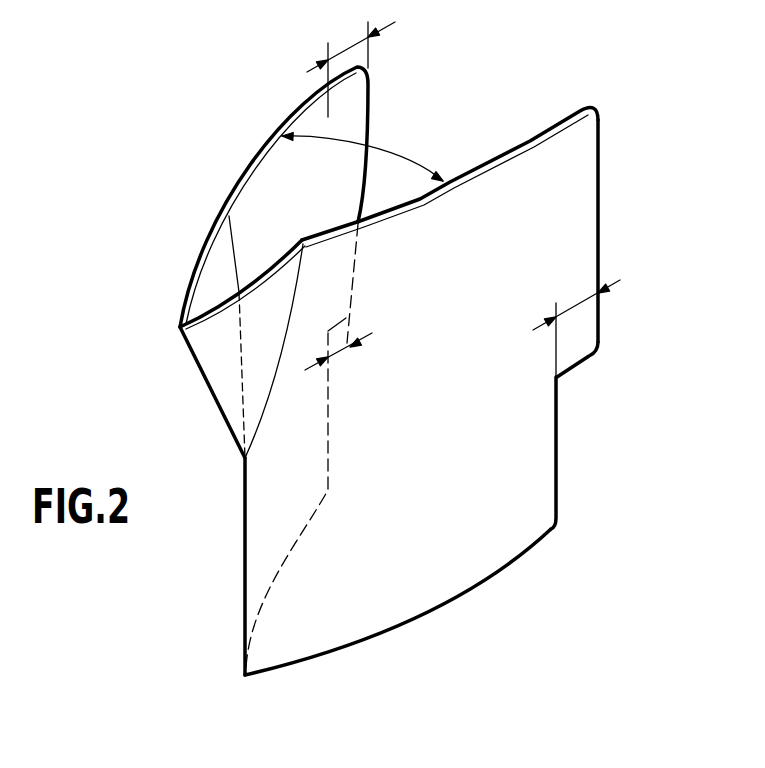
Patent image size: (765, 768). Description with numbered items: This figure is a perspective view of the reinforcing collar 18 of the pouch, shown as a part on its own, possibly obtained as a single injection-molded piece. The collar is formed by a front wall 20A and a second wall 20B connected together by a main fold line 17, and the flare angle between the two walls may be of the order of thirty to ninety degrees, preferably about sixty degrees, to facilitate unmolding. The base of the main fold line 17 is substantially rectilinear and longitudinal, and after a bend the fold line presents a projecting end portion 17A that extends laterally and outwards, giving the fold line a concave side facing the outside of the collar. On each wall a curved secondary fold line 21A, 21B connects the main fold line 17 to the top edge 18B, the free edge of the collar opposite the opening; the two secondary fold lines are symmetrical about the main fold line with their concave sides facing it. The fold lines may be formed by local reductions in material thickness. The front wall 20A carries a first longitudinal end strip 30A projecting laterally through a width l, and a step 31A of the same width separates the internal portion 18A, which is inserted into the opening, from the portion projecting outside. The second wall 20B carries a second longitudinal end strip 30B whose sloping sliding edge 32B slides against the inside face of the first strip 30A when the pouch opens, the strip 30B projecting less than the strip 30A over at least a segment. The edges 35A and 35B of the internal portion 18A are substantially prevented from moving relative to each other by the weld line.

The reinforcing collar 18 is at (614, 158).
The main fold line 17 is at (245, 603).
The end portion of the main fold line 17A is at (197, 374).
The internal portion of the collar 18A is at (440, 565).
The top edge of the collar 18B is at (492, 164).
The front wall 20A is at (511, 328).
The second wall 20B is at (312, 211).
The secondary fold line 21A is at (283, 368).
The secondary fold line 21B is at (233, 289).
The first longitudinal end strip 30A is at (588, 242).
The second longitudinal end strip 30B is at (360, 103).
The step 31A is at (567, 378).
The sliding edge 32B is at (366, 181).
The edge of the internal portion 35A is at (557, 480).
The edge of the internal portion 35B is at (329, 455).